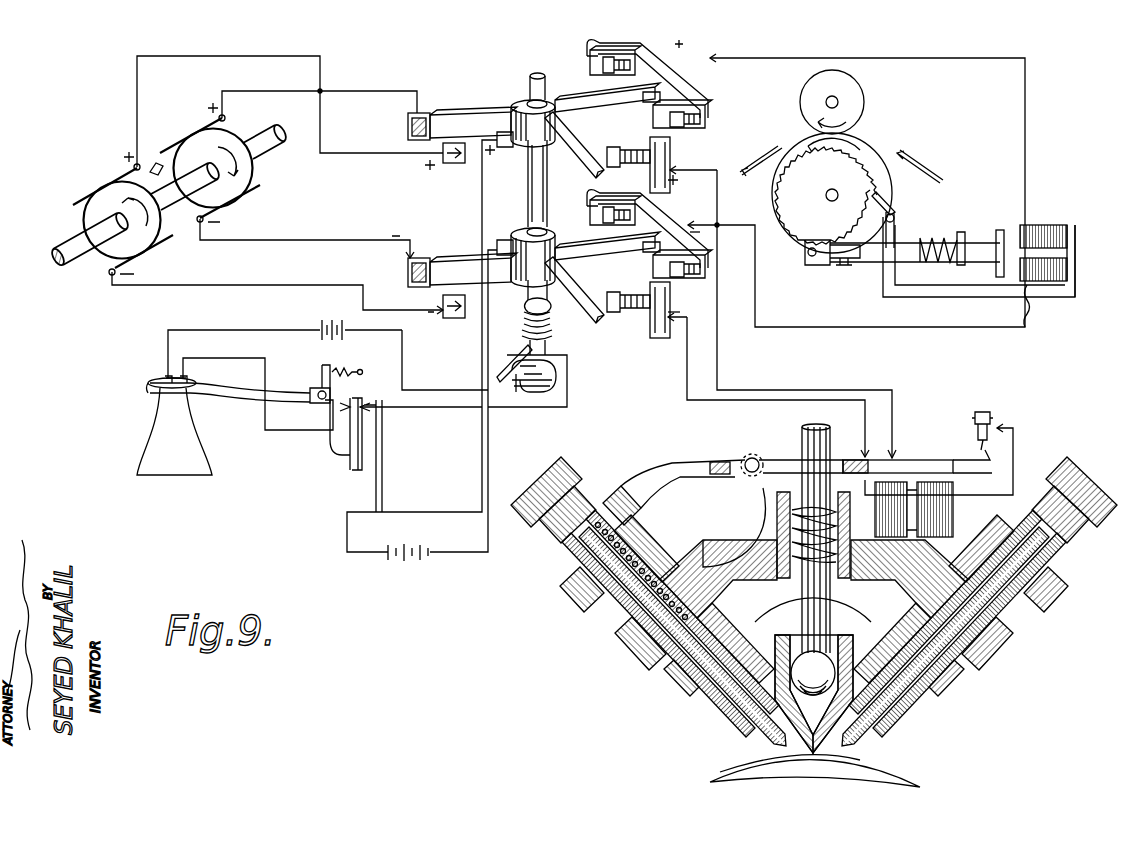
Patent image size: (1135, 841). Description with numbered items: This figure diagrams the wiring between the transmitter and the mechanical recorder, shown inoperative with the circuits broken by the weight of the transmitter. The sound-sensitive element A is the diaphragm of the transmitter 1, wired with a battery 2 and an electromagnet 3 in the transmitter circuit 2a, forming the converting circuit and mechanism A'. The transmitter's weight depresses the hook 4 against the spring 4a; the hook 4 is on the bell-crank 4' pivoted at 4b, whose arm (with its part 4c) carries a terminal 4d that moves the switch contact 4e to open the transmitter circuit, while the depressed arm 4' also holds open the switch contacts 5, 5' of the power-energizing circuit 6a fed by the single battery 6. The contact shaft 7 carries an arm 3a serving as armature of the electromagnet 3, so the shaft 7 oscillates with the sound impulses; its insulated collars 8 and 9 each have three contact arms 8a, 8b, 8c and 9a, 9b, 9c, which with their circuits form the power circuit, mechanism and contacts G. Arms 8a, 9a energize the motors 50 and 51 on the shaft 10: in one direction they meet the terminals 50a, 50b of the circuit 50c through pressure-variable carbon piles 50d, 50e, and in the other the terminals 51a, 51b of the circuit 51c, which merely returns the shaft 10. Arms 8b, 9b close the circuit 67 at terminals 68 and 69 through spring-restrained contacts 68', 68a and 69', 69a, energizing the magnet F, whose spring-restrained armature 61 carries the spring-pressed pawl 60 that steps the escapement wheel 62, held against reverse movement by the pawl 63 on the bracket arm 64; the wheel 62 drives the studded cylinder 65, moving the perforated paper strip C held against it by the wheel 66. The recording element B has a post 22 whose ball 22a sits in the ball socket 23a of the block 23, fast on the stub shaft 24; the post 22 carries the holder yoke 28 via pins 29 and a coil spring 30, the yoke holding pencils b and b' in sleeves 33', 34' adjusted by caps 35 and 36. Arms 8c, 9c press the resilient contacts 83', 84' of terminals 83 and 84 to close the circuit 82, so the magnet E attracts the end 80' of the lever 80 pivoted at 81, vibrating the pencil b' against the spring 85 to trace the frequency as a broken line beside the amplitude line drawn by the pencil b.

The shaft 10 is at (78, 240).
The motor 50 is at (108, 192).
The motor 51 is at (198, 140).
The circuit for the motor 50c is at (250, 56).
The circuit of the motor 51c is at (264, 91).
The carbon pile 50e is at (396, 250).
The terminal 50a is at (423, 101).
The carbon pile 50d is at (408, 130).
The terminal 50b is at (456, 164).
The terminal 51a is at (410, 256).
The terminal 51b is at (454, 318).
The contact shaft 7 is at (548, 182).
The power circuit, mechanism and contacts G is at (506, 184).
The collar or bearing 8 is at (520, 100).
The contact arm 8a is at (470, 103).
The contact arm 8b is at (575, 90).
The contact arm 8c is at (578, 145).
The collar or bearing 9 is at (518, 232).
The contact arm 9a is at (452, 262).
The contact arm 9b is at (574, 240).
The contact arm 9c is at (582, 298).
The power-energizing circuit 6a is at (456, 553).
The battery 6 is at (390, 562).
The terminal 68 is at (659, 71).
The spring restrained contact 68' is at (614, 47).
The spring restrained contact 68a is at (690, 66).
The terminal 83 is at (659, 165).
The resilient contact 83' is at (624, 130).
The terminal 69 is at (649, 232).
The spring restrained contact 69' is at (616, 198).
The spring restrained contact 69a is at (650, 264).
The terminal 84 is at (643, 326).
The resilient contact 84' is at (624, 345).
The circuit 67 is at (1025, 100).
The circuit 82 is at (818, 388).
The bracket arm 64 is at (1050, 294).
The wheel 66 is at (850, 90).
The stub shaft 24 is at (840, 103).
The studded cylinder 65 is at (773, 190).
The escapement wheel 62 is at (826, 196).
The pawl 63 is at (870, 212).
The spring-pressed pawl 60 is at (814, 266).
The spring-restrained armature 61 is at (980, 240).
The magnet F is at (1052, 222).
The sound-sensitive element A is at (164, 425).
The transmitter 1 is at (180, 430).
The hook 4 is at (216, 412).
The bell-crank 4' is at (231, 410).
The spring 4a is at (344, 366).
The pivot 4b is at (320, 382).
The lever part 4c is at (312, 414).
The terminal 4d is at (328, 470).
The switch contact 4e is at (340, 470).
The switch contact 5 is at (374, 434).
The switch contact 5' is at (356, 456).
The battery 2 is at (322, 326).
The transmitter circuit 2a is at (246, 330).
The electromagnet 3 is at (522, 312).
The circuit and mechanism A' is at (538, 382).
The arm 3a is at (497, 360).
The pencil b is at (704, 519).
The pivot 81 is at (752, 454).
The lever 80 is at (723, 504).
The end of lever 80' is at (918, 442).
The magnet E is at (954, 512).
The post 22 is at (826, 424).
The ball 22a is at (860, 720).
The holder yoke 28 is at (838, 492).
The pins 29 is at (810, 470).
The coil spring 30 is at (852, 560).
The block 23 is at (950, 680).
The ball socket 23a is at (848, 630).
The recording element B is at (813, 693).
The cap 36 is at (570, 460).
The spring 85 is at (625, 600).
The sleeve 33' is at (682, 636).
The cap 35 is at (1070, 468).
The sleeve 34' is at (945, 636).
The pencil b' is at (755, 740).
The recording material C is at (900, 782).